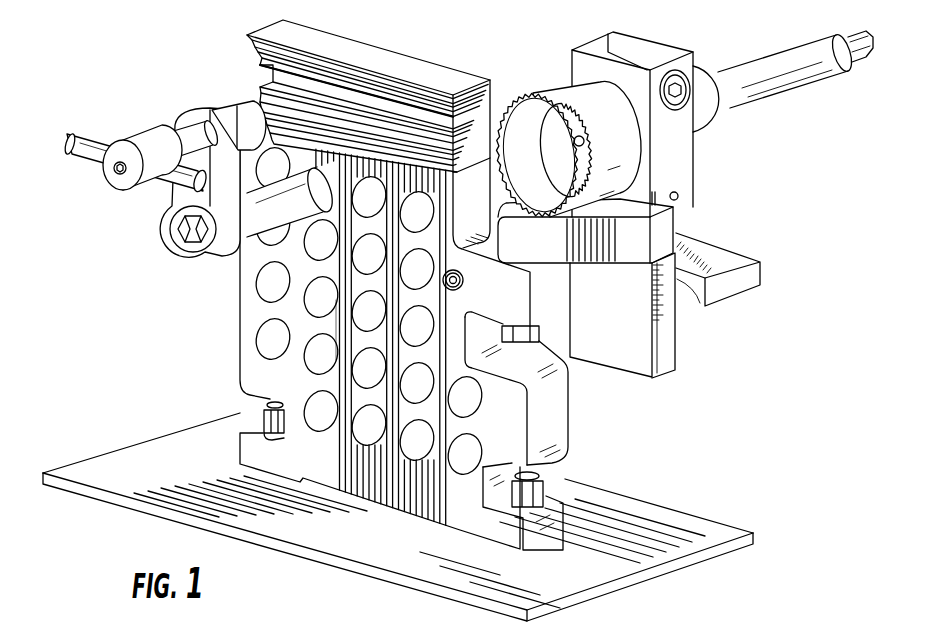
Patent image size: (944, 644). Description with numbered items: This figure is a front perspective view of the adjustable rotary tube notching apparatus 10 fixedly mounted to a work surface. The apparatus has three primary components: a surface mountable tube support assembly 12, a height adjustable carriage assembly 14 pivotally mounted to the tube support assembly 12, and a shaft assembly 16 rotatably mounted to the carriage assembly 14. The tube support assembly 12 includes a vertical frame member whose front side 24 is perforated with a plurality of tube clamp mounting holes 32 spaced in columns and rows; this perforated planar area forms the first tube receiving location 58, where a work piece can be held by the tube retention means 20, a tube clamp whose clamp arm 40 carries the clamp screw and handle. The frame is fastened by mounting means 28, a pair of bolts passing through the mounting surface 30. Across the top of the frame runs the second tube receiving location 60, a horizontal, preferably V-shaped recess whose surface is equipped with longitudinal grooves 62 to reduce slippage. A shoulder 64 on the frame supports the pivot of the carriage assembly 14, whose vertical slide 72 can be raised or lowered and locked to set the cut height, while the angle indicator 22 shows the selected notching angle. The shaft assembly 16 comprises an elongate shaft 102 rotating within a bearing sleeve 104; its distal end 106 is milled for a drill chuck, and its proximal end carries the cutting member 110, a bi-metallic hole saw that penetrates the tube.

The rotary tube notching apparatus 10 is at (457, 63).
The tube support assembly 12 is at (357, 346).
The carriage assembly 14 is at (595, 235).
The shaft assembly 16 is at (791, 100).
The tube retention means 20 is at (138, 120).
The angle indicator 22 is at (739, 237).
The front side 24 is at (355, 487).
The mounting means 28 is at (248, 411).
The mounting surface 30 is at (385, 551).
The tube clamp mounting holes 32 is at (368, 257).
The clamp arm 40 is at (303, 210).
The first tube receiving location 58 is at (332, 331).
The second tube receiving location 60 is at (341, 127).
The longitudinal grooves 62 is at (397, 128).
The shoulder 64 is at (491, 248).
The vertical slide 72 is at (625, 320).
The elongate shaft 102 is at (773, 72).
The bearing sleeve 104 is at (710, 127).
The distal end 106 is at (863, 57).
The cutting member 110 is at (550, 97).